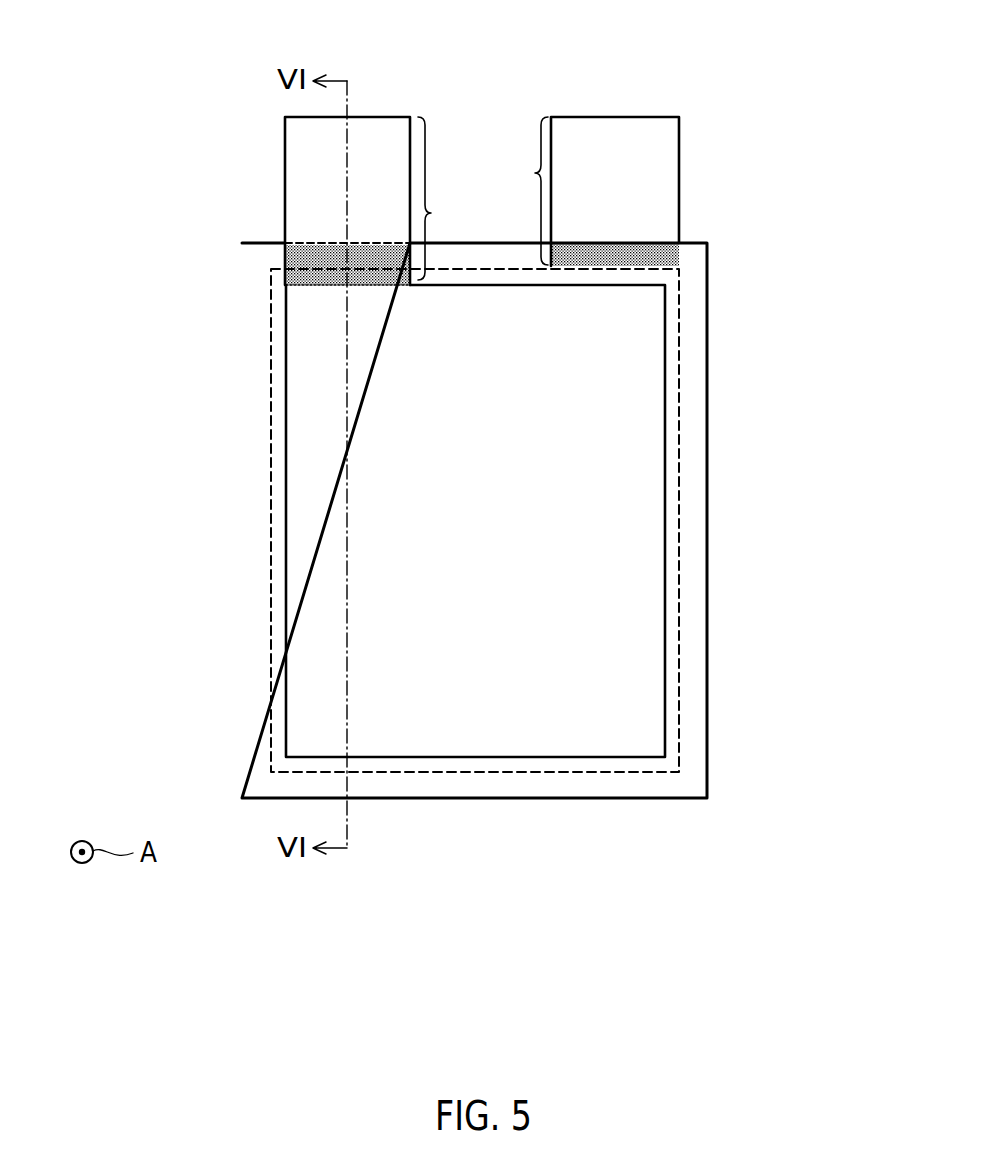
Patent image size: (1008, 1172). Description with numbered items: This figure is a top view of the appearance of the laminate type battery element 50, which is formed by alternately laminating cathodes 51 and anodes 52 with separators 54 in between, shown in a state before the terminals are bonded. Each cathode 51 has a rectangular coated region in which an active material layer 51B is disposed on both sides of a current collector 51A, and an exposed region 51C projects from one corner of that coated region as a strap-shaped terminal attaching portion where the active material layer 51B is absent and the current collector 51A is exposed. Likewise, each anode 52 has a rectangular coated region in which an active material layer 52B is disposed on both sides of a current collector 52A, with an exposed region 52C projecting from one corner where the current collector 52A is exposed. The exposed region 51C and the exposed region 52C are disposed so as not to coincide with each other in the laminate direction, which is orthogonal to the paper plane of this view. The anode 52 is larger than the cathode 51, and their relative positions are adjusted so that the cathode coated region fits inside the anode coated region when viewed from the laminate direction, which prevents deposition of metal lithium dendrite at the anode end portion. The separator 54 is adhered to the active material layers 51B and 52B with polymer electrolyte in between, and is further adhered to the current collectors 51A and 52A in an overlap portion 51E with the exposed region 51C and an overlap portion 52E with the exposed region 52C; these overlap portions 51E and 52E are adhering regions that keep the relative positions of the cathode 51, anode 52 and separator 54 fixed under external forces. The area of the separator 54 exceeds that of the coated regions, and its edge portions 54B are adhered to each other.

The battery element 50 is at (770, 917).
The cathode 51 is at (352, 383).
The current collector 51A is at (312, 207).
The active material layer 51B is at (297, 360).
The exposed region 51C is at (451, 198).
The overlap portion 51E is at (375, 262).
The anode 52 is at (692, 189).
The current collector 52A is at (635, 195).
The active material layer 52B is at (672, 345).
The exposed region 52C is at (513, 191).
The overlap portion 52E is at (586, 262).
The separator 54 is at (543, 520).
The edge portions 54B is at (700, 693).